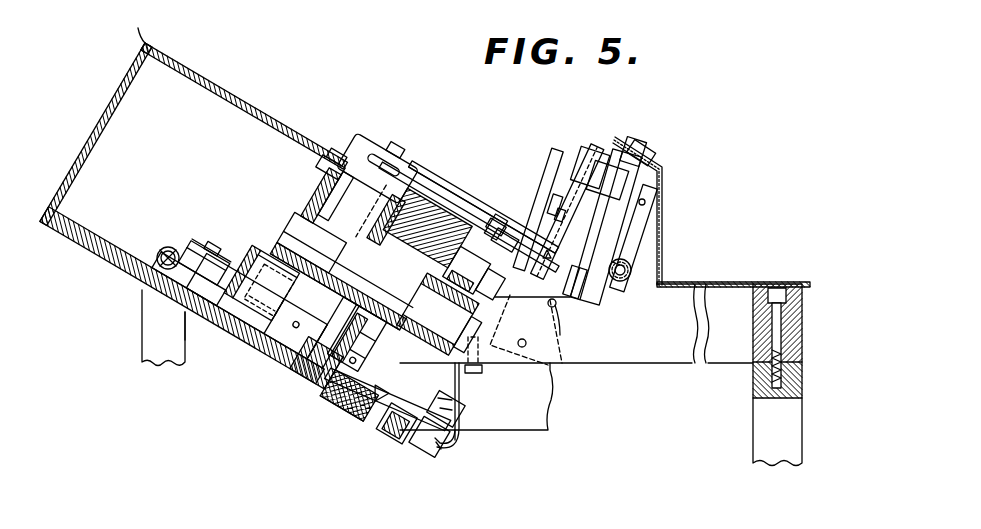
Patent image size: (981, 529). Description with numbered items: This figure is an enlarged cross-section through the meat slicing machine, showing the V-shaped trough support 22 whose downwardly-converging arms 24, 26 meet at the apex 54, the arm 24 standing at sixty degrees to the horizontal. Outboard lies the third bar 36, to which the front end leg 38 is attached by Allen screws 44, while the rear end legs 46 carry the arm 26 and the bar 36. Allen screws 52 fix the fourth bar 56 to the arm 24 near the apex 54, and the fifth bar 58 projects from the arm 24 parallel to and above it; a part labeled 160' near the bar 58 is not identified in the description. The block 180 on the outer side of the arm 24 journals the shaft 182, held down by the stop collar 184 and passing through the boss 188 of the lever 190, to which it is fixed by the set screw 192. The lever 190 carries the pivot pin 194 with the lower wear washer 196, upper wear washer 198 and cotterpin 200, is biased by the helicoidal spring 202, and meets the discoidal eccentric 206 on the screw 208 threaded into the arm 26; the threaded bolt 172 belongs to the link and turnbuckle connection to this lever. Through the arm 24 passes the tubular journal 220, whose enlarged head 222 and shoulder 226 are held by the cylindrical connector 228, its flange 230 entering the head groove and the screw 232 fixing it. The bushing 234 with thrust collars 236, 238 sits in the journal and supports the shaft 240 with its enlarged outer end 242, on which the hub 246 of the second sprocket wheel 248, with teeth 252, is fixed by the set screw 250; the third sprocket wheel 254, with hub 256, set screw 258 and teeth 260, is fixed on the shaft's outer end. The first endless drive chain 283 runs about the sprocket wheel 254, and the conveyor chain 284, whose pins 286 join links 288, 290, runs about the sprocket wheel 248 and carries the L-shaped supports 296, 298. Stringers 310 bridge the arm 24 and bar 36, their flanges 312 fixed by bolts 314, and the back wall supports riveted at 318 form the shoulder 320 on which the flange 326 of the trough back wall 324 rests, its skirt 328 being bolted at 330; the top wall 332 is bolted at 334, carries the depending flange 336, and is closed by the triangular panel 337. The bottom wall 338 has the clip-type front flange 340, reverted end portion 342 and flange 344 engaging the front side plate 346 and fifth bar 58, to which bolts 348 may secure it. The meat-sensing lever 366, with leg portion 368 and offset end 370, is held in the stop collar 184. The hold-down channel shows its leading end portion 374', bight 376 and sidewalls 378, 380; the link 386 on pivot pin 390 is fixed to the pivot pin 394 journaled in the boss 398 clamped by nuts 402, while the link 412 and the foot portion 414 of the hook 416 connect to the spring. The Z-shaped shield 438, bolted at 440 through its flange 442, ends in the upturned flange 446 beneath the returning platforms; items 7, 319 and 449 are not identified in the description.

The lever arm 7 is at (645, 210).
The trough support 22 is at (84, 273).
The trough support arm 24 is at (438, 177).
The trough support arm 26 is at (246, 342).
The third bar 36 is at (800, 332).
The front end leg 38 is at (756, 430).
The Allen screws 44 is at (770, 336).
The rear end legs 46 is at (142, 326).
The Allen screws 52 is at (356, 396).
The apex 54 is at (312, 377).
The fourth bar 56 is at (348, 394).
The fifth bar 58 is at (445, 184).
The axis line 160' is at (358, 211).
The threaded bolt 172 is at (201, 257).
The block 180 is at (308, 187).
The shaft 182 is at (270, 258).
The stop collar 184 is at (380, 150).
The boss 188 is at (268, 342).
The lever 190 is at (300, 357).
The set screw 192 is at (285, 345).
The pivot pin 194 is at (218, 216).
The lower wear washer 196 is at (190, 249).
The upper wear washer 198 is at (200, 232).
The cotterpin 200 is at (260, 262).
The helicoidal spring 202 is at (157, 251).
The discoidal eccentric 206 is at (185, 296).
The screw 208 is at (184, 314).
The tubular journal 220 is at (265, 313).
The enlarged head 222 is at (426, 268).
The shoulder 226 is at (412, 250).
The cylindrical connector 228 is at (366, 352).
The circumferential flange 230 is at (371, 346).
The screw 232 is at (368, 335).
The bushing 234 is at (376, 291).
The thrust collar 236 is at (262, 303).
The thrust collar 238 is at (432, 313).
The shaft 240 is at (358, 278).
The enlarged outer end 242 is at (466, 320).
The hub 246 is at (362, 367).
The second sprocket wheel 248 is at (450, 389).
The set screw 250 is at (468, 270).
The peripheral teeth 252 is at (408, 420).
The third sprocket wheel 254 is at (305, 206).
The hub 256 is at (337, 265).
The set screw 258 is at (324, 234).
The peripheral teeth 260 is at (384, 148).
The first endless drive chain 283 is at (318, 170).
The conveyor chain 284 is at (452, 400).
The pins 286 is at (452, 409).
The links 288 is at (385, 411).
The links 290 is at (430, 442).
The support 296 is at (396, 416).
The support 298 is at (418, 432).
The stringers 310 is at (660, 366).
The flanges 312 is at (330, 382).
The bolts 314 is at (560, 332).
The rivets 318 is at (522, 347).
The pin 319 is at (375, 380).
The shoulder 320 is at (553, 300).
The back wall 324 is at (583, 206).
The flange 326 is at (588, 262).
The skirt 328 is at (510, 304).
The bolts 330 is at (526, 297).
The top wall 332 is at (665, 162).
The bolts 334 is at (648, 150).
The flange 336 is at (661, 179).
The triangular panel 337 is at (686, 283).
The bottom wall 338 is at (205, 80).
The front flange 340 is at (133, 58).
The reverted end portion 342 is at (146, 42).
The flange 344 is at (499, 221).
The front side plate 346 is at (92, 130).
The bolts 348 is at (372, 224).
The meat-sensing lever 366 is at (440, 162).
The leg portion 368 is at (462, 196).
The offset end 370 is at (512, 218).
The leading end portion 374' is at (538, 198).
The bight 376 is at (570, 192).
The meat-engaging sidewall 378 is at (541, 256).
The meat-engaging sidewall 380 is at (505, 232).
The link 386 is at (548, 170).
The pivot pin 390 is at (580, 202).
The pivot pin 394 is at (585, 150).
The boss 398 is at (605, 160).
The nuts 402 is at (633, 145).
The link 412 is at (592, 260).
The foot portion 414 is at (640, 262).
The L-shaped hook 416 is at (630, 268).
The Z-shaped shield 438 is at (460, 420).
The bolts 440 is at (490, 380).
The upper flange 442 is at (485, 370).
The flange 446 is at (445, 449).
The corner 449 is at (459, 433).